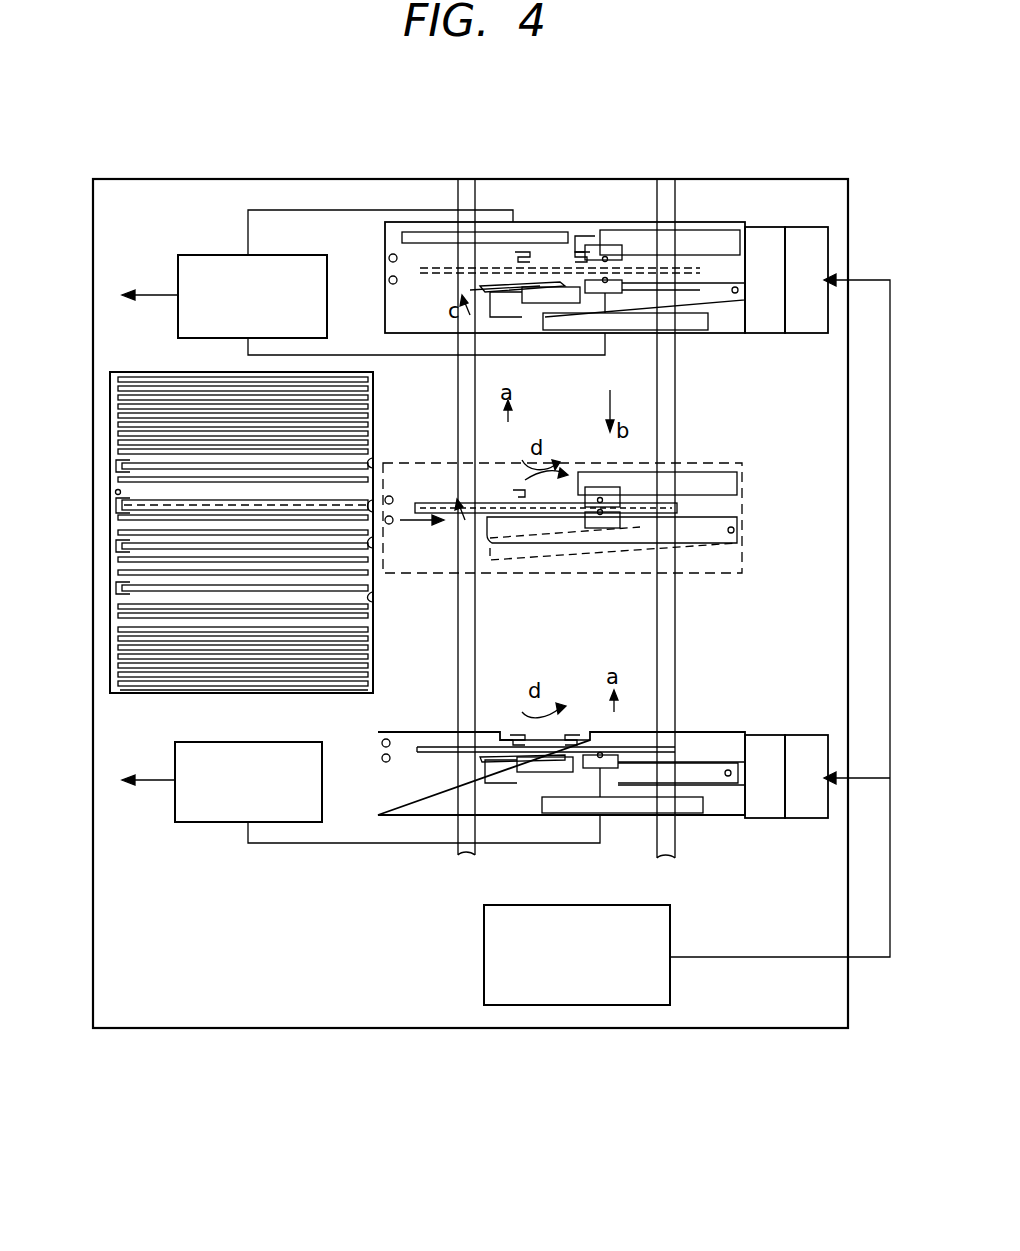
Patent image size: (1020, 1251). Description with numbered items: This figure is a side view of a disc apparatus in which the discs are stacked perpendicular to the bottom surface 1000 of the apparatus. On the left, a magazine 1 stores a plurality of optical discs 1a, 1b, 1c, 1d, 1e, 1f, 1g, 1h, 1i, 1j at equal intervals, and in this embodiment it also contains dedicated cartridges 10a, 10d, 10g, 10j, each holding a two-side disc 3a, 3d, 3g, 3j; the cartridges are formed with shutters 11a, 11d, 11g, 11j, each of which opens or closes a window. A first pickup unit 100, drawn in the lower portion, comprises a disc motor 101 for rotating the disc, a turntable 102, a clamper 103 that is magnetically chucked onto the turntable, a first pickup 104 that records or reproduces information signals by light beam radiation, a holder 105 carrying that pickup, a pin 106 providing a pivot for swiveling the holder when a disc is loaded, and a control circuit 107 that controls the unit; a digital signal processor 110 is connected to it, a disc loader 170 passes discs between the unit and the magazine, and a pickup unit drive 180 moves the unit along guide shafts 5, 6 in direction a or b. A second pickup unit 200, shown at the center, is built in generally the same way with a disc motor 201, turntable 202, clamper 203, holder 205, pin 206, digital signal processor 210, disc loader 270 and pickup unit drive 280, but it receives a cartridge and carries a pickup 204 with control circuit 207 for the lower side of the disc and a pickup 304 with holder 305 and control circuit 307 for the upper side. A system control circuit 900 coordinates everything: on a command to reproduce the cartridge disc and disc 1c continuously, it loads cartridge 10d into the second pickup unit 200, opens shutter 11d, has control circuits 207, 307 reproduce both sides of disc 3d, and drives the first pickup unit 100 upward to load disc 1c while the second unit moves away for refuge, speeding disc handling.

The magazine 1 is at (150, 372).
The optical disc 1a is at (118, 615).
The optical disc 1b is at (118, 629).
The optical disc 1c is at (437, 748).
The optical disc 1d is at (118, 638).
The optical disc 1e is at (118, 647).
The optical disc 1f is at (118, 656).
The optical disc 1g is at (118, 665).
The optical disc 1h is at (118, 674).
The optical disc 1i is at (125, 686).
The optical disc 1j is at (145, 692).
The two-side disc 3a is at (120, 462).
The two-side disc 3d is at (118, 498).
The two-side disc 3g is at (118, 545).
The two-side disc 3j is at (118, 590).
The guide shaft 5 is at (462, 190).
The guide shaft 6 is at (657, 200).
The cartridge 10a is at (118, 478).
The cartridge 10d is at (118, 515).
The cartridge 10g is at (118, 560).
The cartridge 10j is at (118, 606).
The shutter 11a is at (370, 462).
The shutter 11d is at (376, 505).
The shutter 11g is at (370, 541).
The shutter 11j is at (373, 597).
The first pickup unit 100 is at (378, 760).
The disc motor 101 is at (530, 773).
The turntable 102 is at (505, 757).
The clamper 103 is at (565, 735).
The first pickup 104 is at (600, 770).
The holder 105 is at (718, 784).
The pin 106 is at (730, 770).
The control circuit 107 is at (632, 814).
The digital signal processor 110 is at (205, 742).
The disc loader 170 is at (760, 819).
The pickup unit drive 180 is at (806, 819).
The second pickup unit 200 is at (422, 334).
The disc motor 201 is at (540, 304).
The turntable 202 is at (488, 285).
The clamper 203 is at (528, 232).
The pickup 204 is at (608, 295).
The holder 205 is at (713, 301).
The pin 206 is at (747, 288).
The control circuit 207 is at (590, 331).
The digital signal processor 210 is at (205, 255).
The disc loader 270 is at (758, 334).
The pickup unit drive 280 is at (810, 334).
The pickup 304 is at (606, 245).
The holder 305 is at (703, 235).
The control circuit 307 is at (542, 252).
The system control circuit 900 is at (484, 960).
The bottom surface 1000 is at (356, 1029).